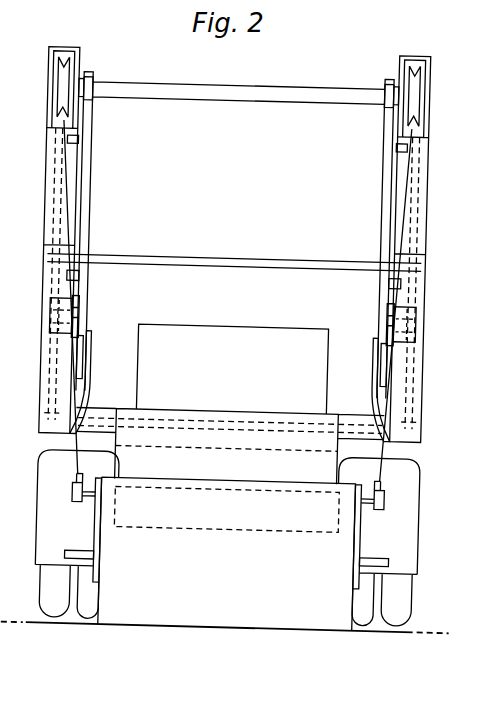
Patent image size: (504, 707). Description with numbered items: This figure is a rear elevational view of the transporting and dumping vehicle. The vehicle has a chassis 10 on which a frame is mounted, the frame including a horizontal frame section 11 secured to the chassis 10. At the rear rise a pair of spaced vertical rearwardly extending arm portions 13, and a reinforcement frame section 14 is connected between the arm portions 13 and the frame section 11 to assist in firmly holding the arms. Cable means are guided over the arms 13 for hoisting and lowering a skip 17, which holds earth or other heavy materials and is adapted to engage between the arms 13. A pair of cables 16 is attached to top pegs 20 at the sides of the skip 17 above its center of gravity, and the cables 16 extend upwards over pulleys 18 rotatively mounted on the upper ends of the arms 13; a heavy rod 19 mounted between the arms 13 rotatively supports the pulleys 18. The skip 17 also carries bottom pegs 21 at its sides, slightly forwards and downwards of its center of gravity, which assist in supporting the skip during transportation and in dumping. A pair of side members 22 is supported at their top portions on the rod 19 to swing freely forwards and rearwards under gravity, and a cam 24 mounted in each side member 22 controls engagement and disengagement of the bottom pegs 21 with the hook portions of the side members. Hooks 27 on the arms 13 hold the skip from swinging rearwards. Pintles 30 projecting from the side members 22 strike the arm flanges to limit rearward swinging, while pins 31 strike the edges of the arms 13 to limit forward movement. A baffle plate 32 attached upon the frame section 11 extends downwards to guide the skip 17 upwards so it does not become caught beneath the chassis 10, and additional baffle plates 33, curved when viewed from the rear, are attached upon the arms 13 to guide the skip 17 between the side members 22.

The chassis 10 is at (186, 510).
The horizontal frame section 11 is at (270, 475).
The arm portions 13 is at (50, 154).
The reinforcement frame section 14 is at (223, 282).
The cables 16 is at (67, 200).
The skip 17 is at (247, 618).
The pulleys 18 is at (60, 68).
The heavy rod 19 is at (242, 93).
The top pegs 20 is at (93, 497).
The bottom pegs 21 is at (70, 550).
The side members 22 is at (88, 172).
The cam 24 is at (77, 330).
The hooks 27 is at (78, 308).
The pintles 30 is at (77, 140).
The pins 31 is at (80, 278).
The baffle plate 32 is at (185, 457).
The baffle plates 33 is at (87, 392).